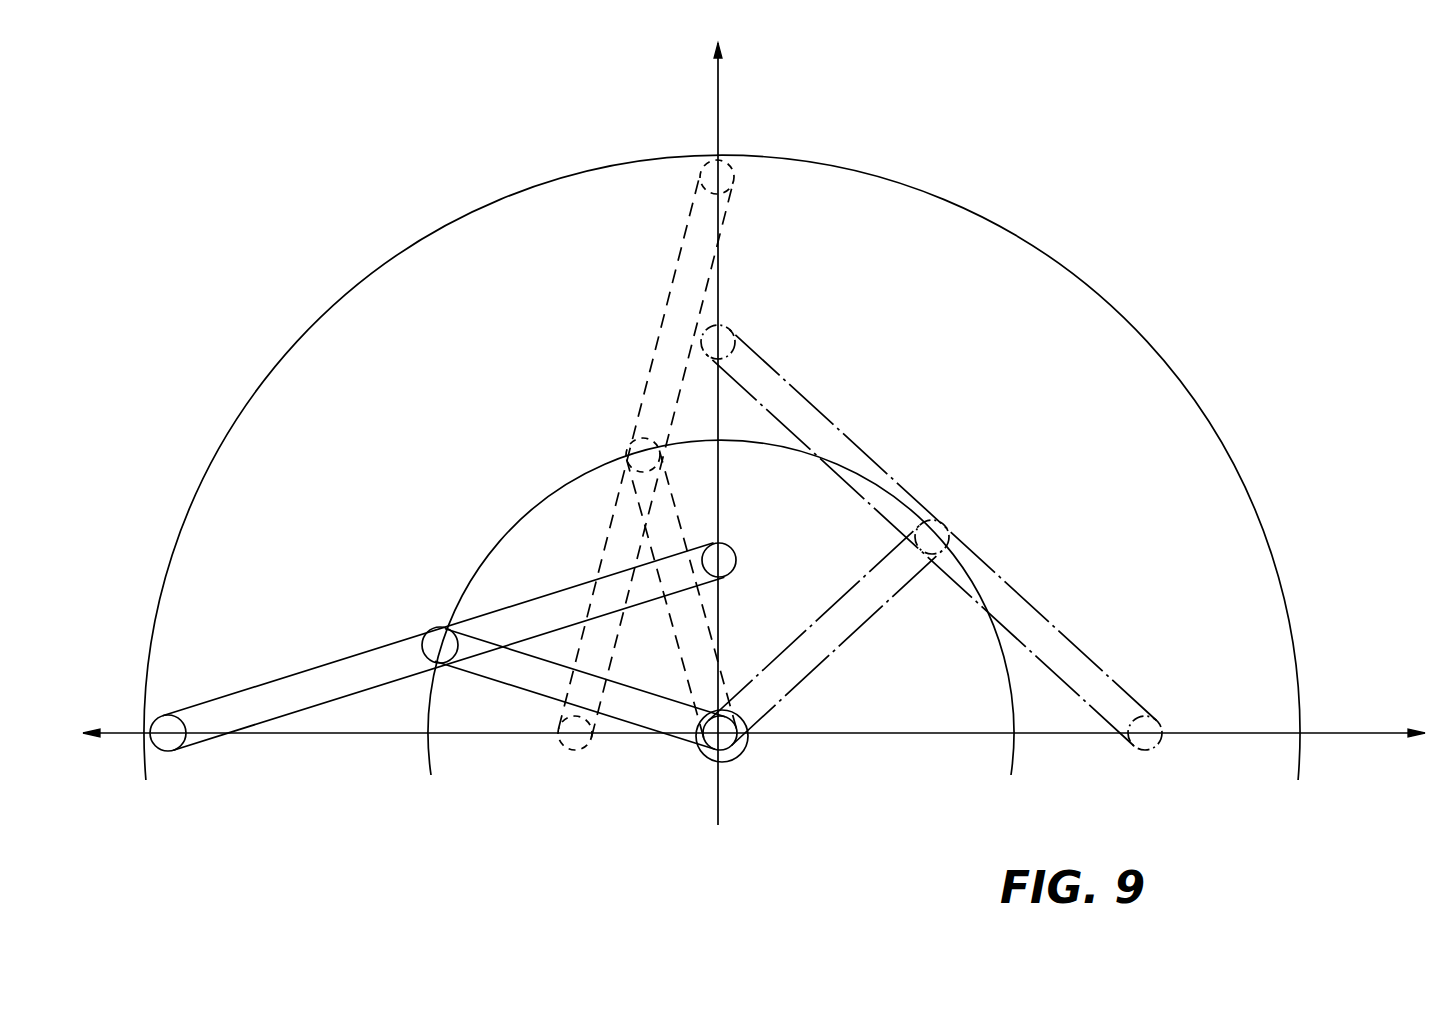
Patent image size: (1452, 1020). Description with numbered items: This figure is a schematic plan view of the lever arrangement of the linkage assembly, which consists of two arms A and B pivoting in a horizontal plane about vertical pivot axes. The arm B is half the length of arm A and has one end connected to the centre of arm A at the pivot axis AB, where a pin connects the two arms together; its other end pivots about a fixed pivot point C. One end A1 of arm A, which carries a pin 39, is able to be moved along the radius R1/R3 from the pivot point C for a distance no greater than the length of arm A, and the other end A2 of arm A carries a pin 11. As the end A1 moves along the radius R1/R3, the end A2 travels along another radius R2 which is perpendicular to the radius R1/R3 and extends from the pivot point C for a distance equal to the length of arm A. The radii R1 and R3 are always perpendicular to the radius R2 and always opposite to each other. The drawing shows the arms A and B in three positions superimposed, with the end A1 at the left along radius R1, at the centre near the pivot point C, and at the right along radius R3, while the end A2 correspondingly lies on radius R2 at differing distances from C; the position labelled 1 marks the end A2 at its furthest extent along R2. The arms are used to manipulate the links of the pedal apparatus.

The radius R1 is at (401, 719).
The radius R2 is at (738, 434).
The radius R3 is at (1072, 716).
The arm A is at (322, 690).
The arm B is at (697, 628).
The fixed pivot point C is at (740, 752).
The end of arm A A1 is at (575, 748).
The end of arm A A2 is at (736, 178).
The pivot axis AB is at (633, 447).
The pin 11 is at (700, 172).
The position one 1 is at (727, 196).
The pin 39 is at (1155, 722).